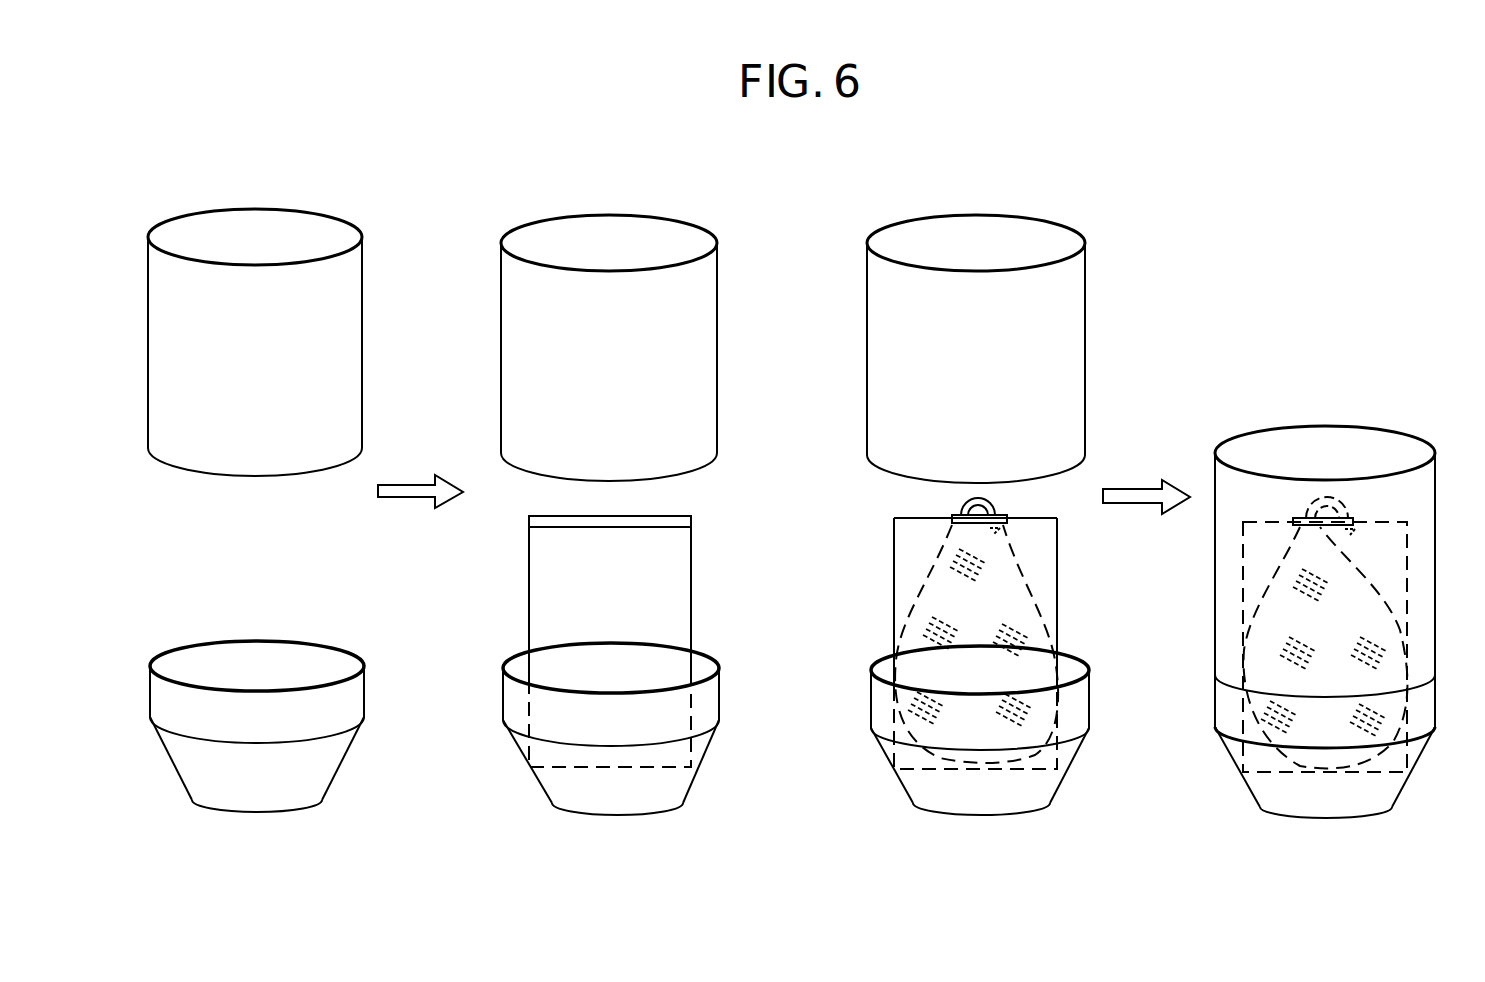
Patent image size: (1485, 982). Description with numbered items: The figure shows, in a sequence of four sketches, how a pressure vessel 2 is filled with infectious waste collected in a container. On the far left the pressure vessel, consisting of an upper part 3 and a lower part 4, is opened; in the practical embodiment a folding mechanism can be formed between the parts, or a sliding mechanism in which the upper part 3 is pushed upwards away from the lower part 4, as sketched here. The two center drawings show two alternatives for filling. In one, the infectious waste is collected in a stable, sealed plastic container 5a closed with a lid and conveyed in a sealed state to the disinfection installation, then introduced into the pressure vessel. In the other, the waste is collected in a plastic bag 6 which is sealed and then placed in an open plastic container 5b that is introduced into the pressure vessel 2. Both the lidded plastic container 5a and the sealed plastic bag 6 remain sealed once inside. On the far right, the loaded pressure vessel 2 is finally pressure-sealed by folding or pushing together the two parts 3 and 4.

The pressure vessel 2 is at (1383, 788).
The upper part 3 is at (286, 224).
The lower part 4 is at (226, 778).
The sealed plastic container 5a is at (540, 578).
The open plastic container 5b is at (912, 551).
The plastic waste bag 6 is at (906, 612).